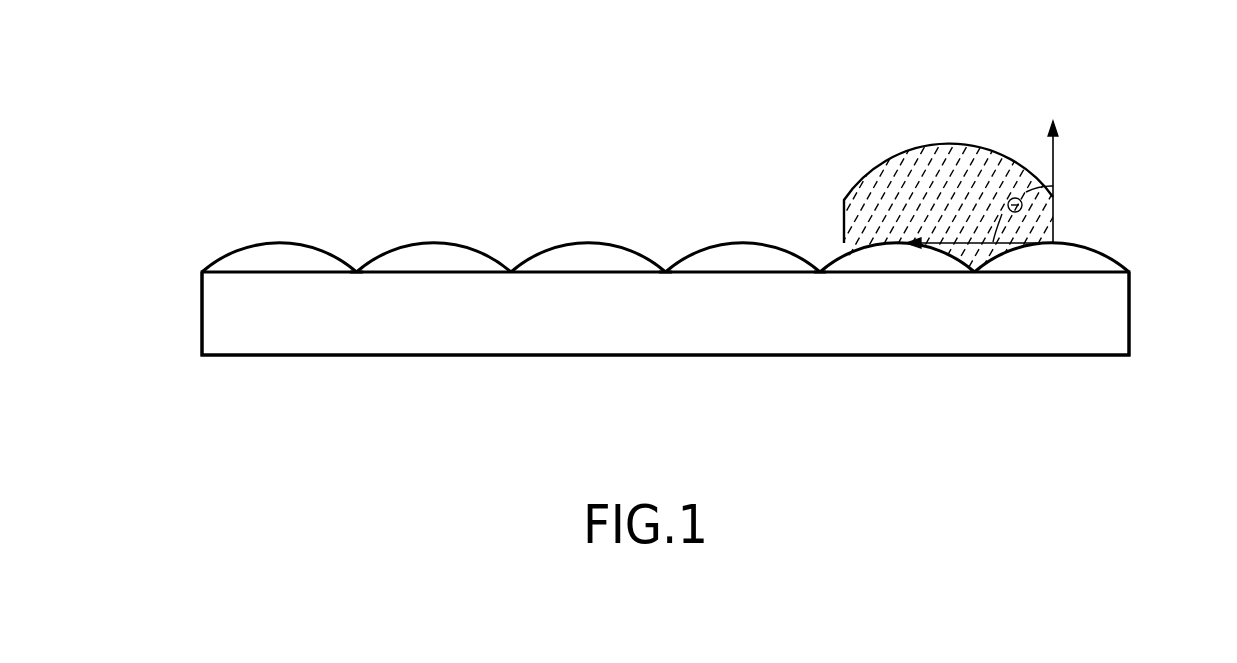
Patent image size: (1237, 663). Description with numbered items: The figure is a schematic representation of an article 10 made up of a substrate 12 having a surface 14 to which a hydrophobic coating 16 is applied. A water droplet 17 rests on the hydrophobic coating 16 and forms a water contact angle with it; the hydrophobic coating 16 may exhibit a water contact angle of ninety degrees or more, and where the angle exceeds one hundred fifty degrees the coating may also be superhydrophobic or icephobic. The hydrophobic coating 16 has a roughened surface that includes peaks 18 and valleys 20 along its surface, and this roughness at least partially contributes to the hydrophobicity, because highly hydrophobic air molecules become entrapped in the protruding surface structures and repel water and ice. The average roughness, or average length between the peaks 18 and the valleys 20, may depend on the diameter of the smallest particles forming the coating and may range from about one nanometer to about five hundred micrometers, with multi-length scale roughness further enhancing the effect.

The article 10 is at (229, 146).
The substrate 12 is at (1105, 314).
The surface 14 is at (666, 272).
The hydrophobic coating 16 is at (433, 253).
The water droplet 17 is at (948, 182).
The peaks 18 is at (277, 241).
The valleys 20 is at (356, 272).